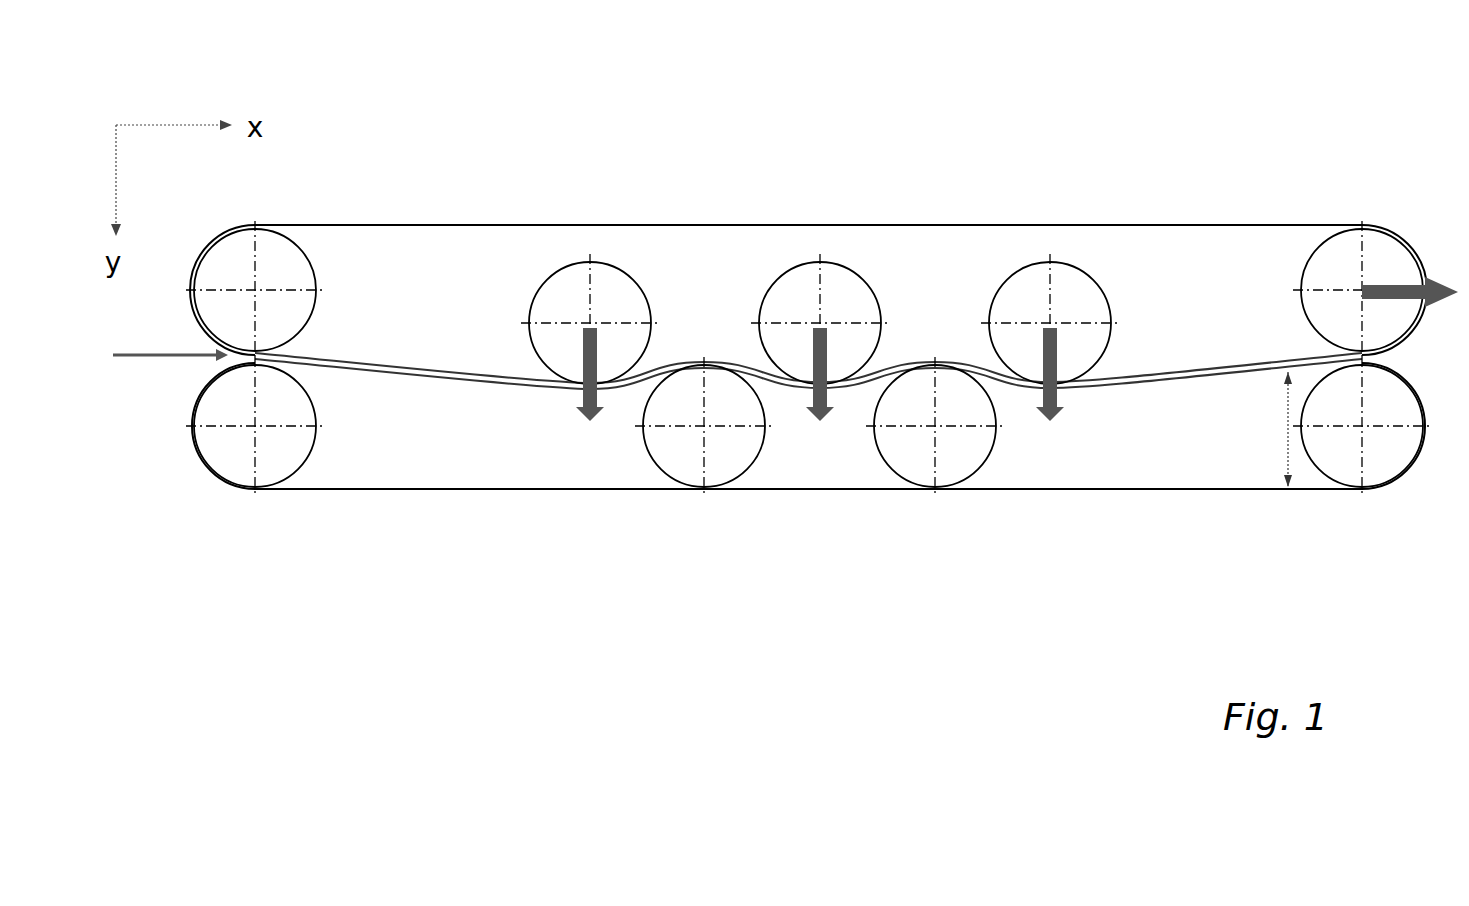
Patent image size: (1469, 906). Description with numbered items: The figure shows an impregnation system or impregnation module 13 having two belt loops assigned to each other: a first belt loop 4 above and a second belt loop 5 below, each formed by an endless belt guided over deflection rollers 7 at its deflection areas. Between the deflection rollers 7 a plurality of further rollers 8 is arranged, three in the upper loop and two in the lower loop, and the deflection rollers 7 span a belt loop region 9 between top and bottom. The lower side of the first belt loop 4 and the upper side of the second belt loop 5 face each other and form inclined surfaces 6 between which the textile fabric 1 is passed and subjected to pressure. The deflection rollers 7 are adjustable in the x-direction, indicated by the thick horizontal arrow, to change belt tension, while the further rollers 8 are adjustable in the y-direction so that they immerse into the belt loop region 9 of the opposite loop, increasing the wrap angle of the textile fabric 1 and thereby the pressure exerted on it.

The textile fabric 1 is at (173, 357).
The first belt loop 4 is at (418, 224).
The second belt loop 5 is at (573, 492).
The surface 6 is at (353, 368).
The deflection roller 7 is at (275, 247).
The further roller 8 is at (625, 303).
The belt loop region 9 is at (1285, 435).
The impregnation module 13 is at (1008, 200).